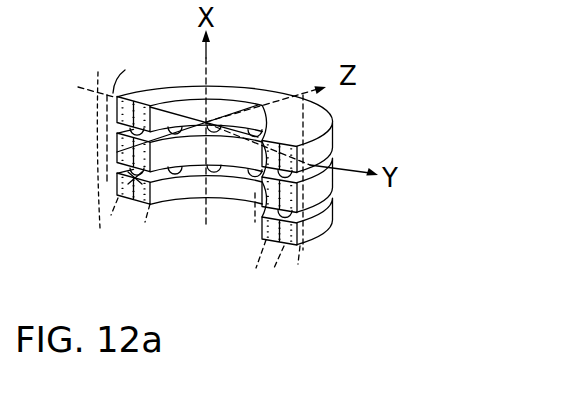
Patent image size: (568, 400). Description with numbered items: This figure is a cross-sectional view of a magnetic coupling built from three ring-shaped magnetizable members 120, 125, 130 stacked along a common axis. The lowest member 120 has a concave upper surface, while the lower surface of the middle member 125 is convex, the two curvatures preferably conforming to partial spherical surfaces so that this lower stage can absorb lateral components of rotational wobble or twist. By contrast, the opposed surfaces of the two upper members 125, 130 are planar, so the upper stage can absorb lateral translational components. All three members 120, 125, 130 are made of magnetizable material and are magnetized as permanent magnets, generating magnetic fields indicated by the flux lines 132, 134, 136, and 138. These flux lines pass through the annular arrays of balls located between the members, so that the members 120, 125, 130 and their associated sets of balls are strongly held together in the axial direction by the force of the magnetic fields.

The ring-shaped magnetizable member 120 is at (312, 222).
The ring-shaped magnetizable member 125 is at (312, 175).
The ring-shaped magnetizable member 130 is at (310, 123).
The flux line 132 is at (121, 184).
The flux line 134 is at (140, 100).
The flux line 136 is at (258, 240).
The flux line 138 is at (282, 262).